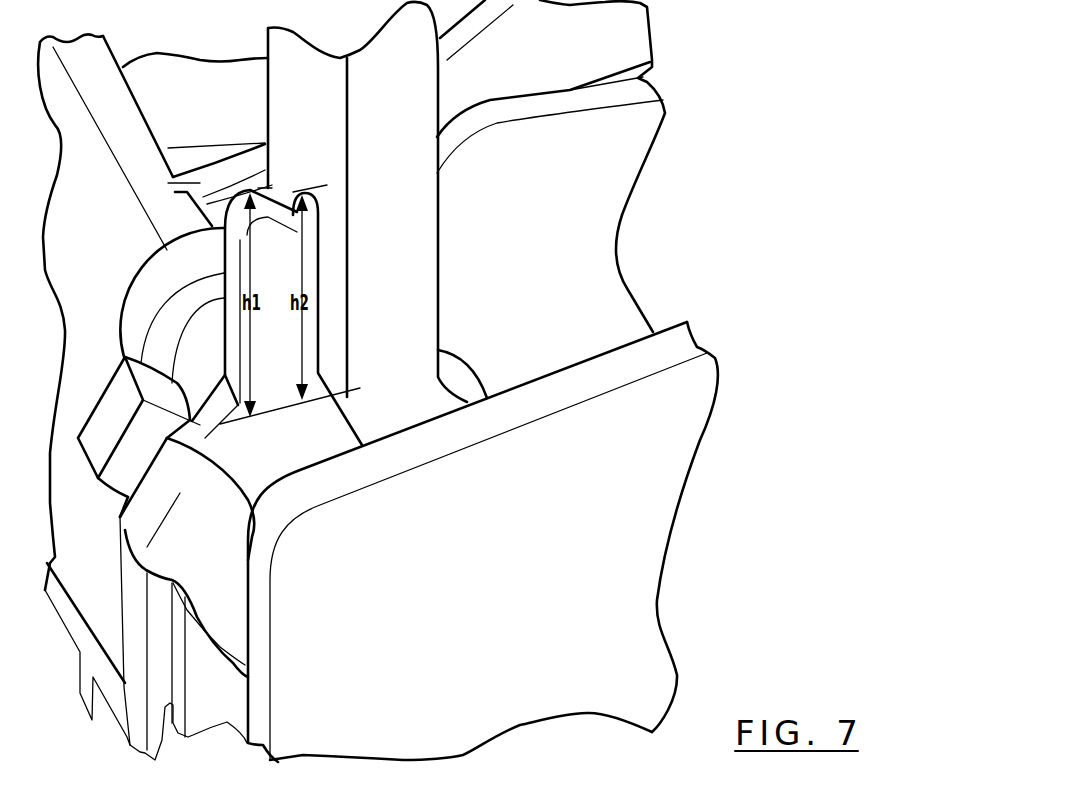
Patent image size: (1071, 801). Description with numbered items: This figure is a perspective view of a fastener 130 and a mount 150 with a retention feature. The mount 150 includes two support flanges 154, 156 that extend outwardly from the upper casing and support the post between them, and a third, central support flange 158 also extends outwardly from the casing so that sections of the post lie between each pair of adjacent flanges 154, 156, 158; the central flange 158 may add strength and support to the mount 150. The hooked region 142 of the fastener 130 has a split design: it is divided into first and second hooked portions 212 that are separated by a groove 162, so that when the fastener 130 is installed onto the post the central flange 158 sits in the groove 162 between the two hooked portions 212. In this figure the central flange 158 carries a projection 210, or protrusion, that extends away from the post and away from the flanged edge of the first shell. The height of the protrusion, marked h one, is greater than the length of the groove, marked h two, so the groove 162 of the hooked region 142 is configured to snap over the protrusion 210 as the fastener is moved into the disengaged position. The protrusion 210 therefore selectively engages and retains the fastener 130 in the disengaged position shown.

The fastener 130 is at (407, 216).
The hooked region 142 is at (505, 201).
The hooked portions 212 is at (392, 298).
The mount 150 is at (315, 447).
The support flange 154 is at (264, 752).
The support flange 156 is at (173, 267).
The central support flange 158 is at (200, 425).
The groove 162 is at (311, 333).
The projection 210 is at (358, 317).